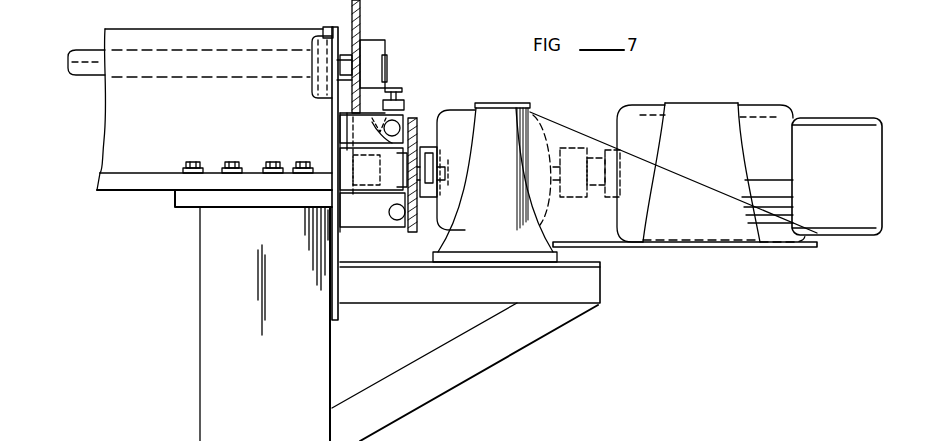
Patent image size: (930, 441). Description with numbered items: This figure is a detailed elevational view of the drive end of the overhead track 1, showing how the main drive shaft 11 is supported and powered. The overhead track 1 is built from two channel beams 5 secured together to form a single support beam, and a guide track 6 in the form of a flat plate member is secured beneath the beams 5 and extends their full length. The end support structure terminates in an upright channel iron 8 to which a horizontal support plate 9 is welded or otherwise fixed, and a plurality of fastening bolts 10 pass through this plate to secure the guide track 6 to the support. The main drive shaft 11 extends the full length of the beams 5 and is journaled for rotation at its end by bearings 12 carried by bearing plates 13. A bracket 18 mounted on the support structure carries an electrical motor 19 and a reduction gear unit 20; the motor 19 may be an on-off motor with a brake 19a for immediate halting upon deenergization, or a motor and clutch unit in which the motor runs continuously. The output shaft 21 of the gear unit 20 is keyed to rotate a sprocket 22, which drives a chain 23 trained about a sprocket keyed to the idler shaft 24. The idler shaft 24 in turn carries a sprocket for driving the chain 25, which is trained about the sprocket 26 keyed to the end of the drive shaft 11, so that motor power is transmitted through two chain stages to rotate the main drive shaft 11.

The overhead track 1 is at (123, 199).
The channel beams 5 is at (189, 124).
The guide track 6 is at (153, 183).
The upright channel iron 8 is at (205, 413).
The horizontal support plate 9 is at (186, 199).
The fastening bolts 10 is at (197, 162).
The main drive shaft 11 is at (90, 67).
The bearings 12 is at (323, 30).
The bearing plates 13 is at (340, 275).
The bracket 18 is at (430, 295).
The electrical motor 19 is at (765, 118).
The brake 19a is at (830, 132).
The reduction gear unit 20 is at (455, 120).
The output shaft 21 is at (422, 140).
The sprocket 22 is at (398, 125).
The chain 23 is at (413, 233).
The idler shaft 24 is at (368, 203).
The chain 25 is at (361, 14).
The sprocket 26 is at (370, 55).